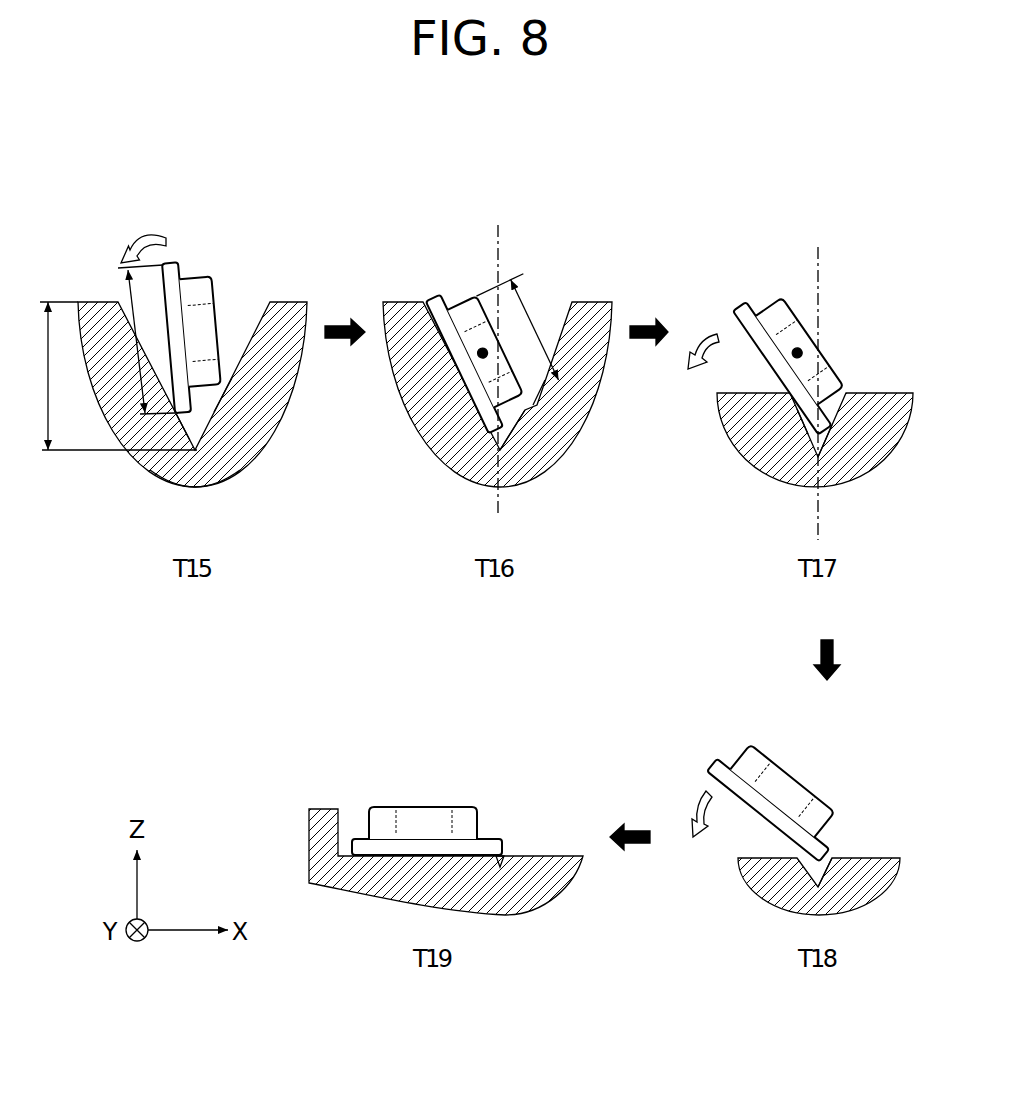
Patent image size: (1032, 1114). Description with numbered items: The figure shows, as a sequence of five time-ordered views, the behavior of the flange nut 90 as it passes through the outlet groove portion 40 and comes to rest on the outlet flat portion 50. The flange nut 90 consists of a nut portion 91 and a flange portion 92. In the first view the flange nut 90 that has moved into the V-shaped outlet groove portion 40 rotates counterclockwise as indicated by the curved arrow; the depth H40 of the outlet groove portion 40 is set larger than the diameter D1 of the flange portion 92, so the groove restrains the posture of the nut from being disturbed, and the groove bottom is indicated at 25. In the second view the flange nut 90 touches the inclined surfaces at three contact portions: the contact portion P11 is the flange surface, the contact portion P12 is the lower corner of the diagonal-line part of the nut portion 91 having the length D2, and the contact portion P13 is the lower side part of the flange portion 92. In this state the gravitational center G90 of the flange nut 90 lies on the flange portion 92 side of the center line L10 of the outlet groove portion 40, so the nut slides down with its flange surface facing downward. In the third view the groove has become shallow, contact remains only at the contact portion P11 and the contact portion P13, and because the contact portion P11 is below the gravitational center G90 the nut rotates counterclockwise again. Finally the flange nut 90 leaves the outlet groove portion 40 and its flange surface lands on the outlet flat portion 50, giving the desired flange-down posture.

The flange nut 90 is at (503, 481).
The nut portion 91 is at (213, 290).
The flange portion 92 is at (171, 262).
The outlet groove portion 40 is at (256, 333).
The groove bottom 25 is at (221, 487).
The outlet flat portion 50 is at (895, 857).
The gravitational center G90 is at (478, 350).
The center line L10 is at (500, 225).
The diameter of the flange portion D1 is at (133, 326).
The length of the diagonal-line part D2 is at (523, 335).
The depth of the outlet groove portion H40 is at (107, 376).
The contact portion P11 is at (178, 427).
The contact portion P12 is at (226, 396).
The contact portion P13 is at (517, 445).